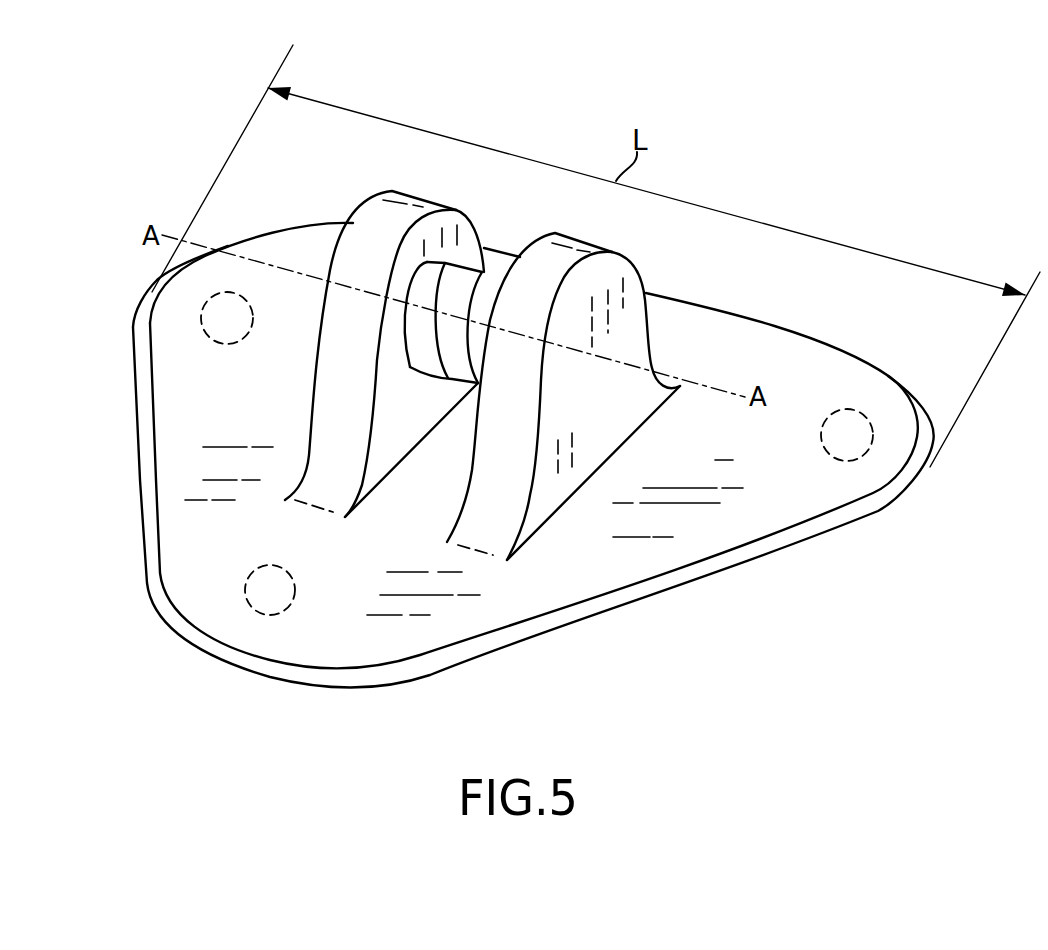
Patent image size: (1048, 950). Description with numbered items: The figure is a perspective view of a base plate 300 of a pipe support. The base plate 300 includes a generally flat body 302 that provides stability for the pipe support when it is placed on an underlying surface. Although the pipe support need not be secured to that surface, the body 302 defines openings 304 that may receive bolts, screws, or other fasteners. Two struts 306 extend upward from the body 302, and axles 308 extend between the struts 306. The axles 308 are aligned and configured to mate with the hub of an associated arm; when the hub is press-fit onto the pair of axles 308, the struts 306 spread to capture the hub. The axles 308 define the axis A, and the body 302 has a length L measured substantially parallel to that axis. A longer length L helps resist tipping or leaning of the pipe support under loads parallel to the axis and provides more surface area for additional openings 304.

The base plate 300 is at (805, 614).
The body 302 is at (577, 587).
The openings 304 is at (208, 333).
The struts 306 is at (340, 353).
The axles 308 is at (420, 350).